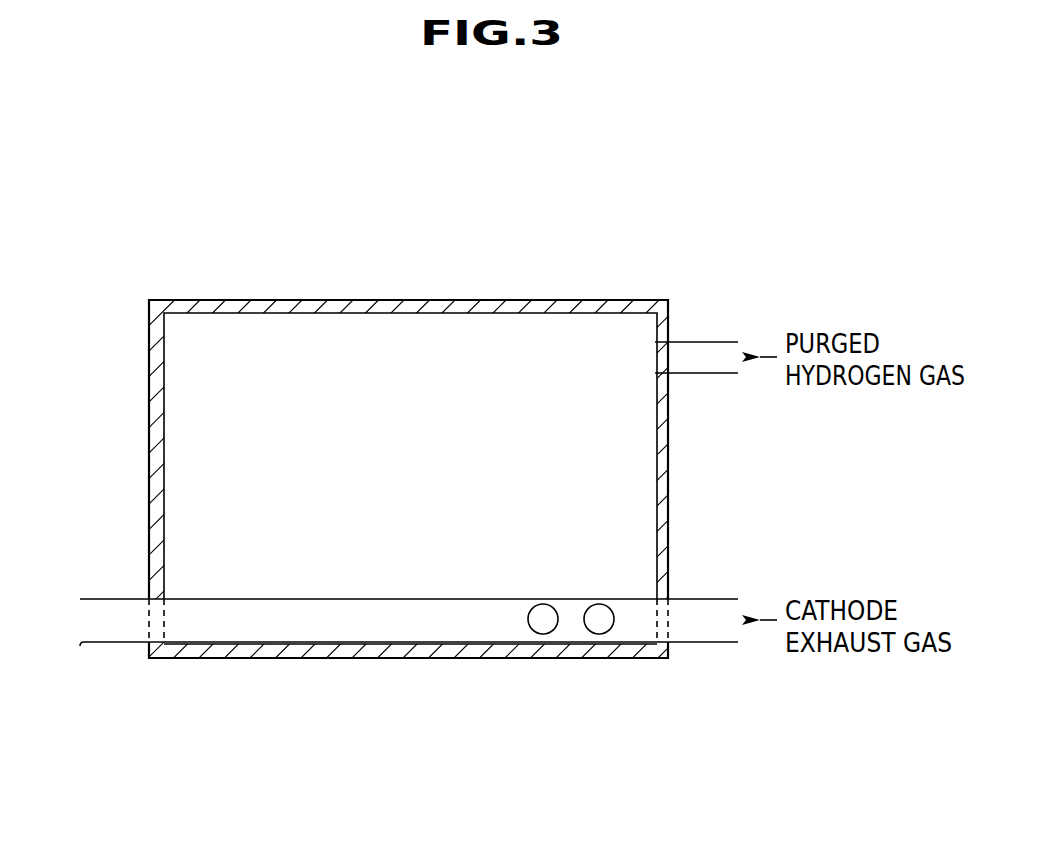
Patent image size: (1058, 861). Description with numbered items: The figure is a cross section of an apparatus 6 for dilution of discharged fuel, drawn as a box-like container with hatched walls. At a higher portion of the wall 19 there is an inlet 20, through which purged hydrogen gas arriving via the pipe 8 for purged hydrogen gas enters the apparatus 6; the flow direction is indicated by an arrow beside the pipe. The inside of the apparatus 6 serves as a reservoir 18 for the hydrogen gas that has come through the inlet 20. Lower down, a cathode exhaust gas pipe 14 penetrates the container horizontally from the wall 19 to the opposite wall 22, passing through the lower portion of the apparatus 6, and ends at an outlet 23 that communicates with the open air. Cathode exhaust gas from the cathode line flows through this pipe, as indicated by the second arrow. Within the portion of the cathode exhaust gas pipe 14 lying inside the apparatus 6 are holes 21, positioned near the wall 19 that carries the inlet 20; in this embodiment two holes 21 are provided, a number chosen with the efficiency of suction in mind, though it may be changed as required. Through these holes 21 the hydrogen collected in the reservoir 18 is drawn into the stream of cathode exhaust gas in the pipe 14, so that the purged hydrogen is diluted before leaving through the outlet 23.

The apparatus for dilution of discharged fuel 6 is at (443, 281).
The pipe for purged hydrogen gas 8 is at (700, 342).
The cathode exhaust gas pipe 14 is at (714, 644).
The reservoir 18 is at (377, 455).
The wall 19 is at (657, 477).
The inlet 20 is at (653, 355).
The holes 21 is at (590, 632).
The wall 22 is at (155, 418).
The outlet 23 is at (80, 646).